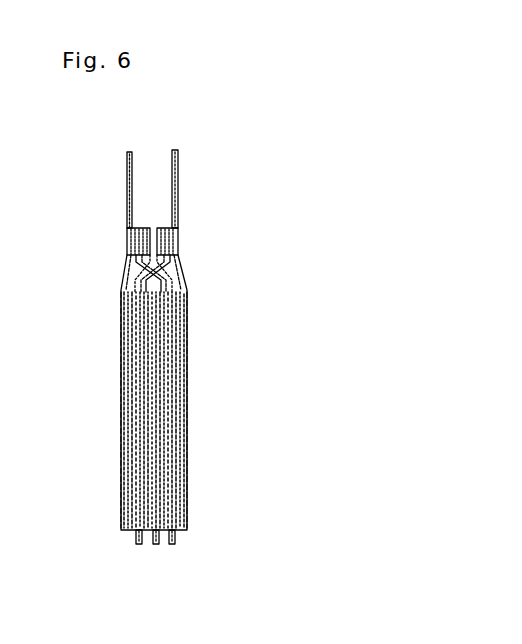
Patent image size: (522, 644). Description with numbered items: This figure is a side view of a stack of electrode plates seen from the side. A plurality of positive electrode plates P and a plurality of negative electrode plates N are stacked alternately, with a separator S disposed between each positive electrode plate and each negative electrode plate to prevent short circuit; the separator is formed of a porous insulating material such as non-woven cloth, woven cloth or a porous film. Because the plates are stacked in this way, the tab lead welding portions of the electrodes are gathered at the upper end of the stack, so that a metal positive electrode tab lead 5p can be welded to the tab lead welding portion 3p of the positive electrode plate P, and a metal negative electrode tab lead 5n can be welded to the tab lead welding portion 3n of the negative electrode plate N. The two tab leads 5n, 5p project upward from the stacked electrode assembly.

The negative electrode tab lead 5n is at (127, 185).
The positive electrode tab lead 5p is at (179, 167).
The tab lead welding portion of negative electrode 3n is at (145, 222).
The tab lead welding portion of positive electrode 3p is at (167, 228).
The negative electrode N is at (119, 298).
The positive electrode P is at (190, 285).
The separator S is at (175, 548).